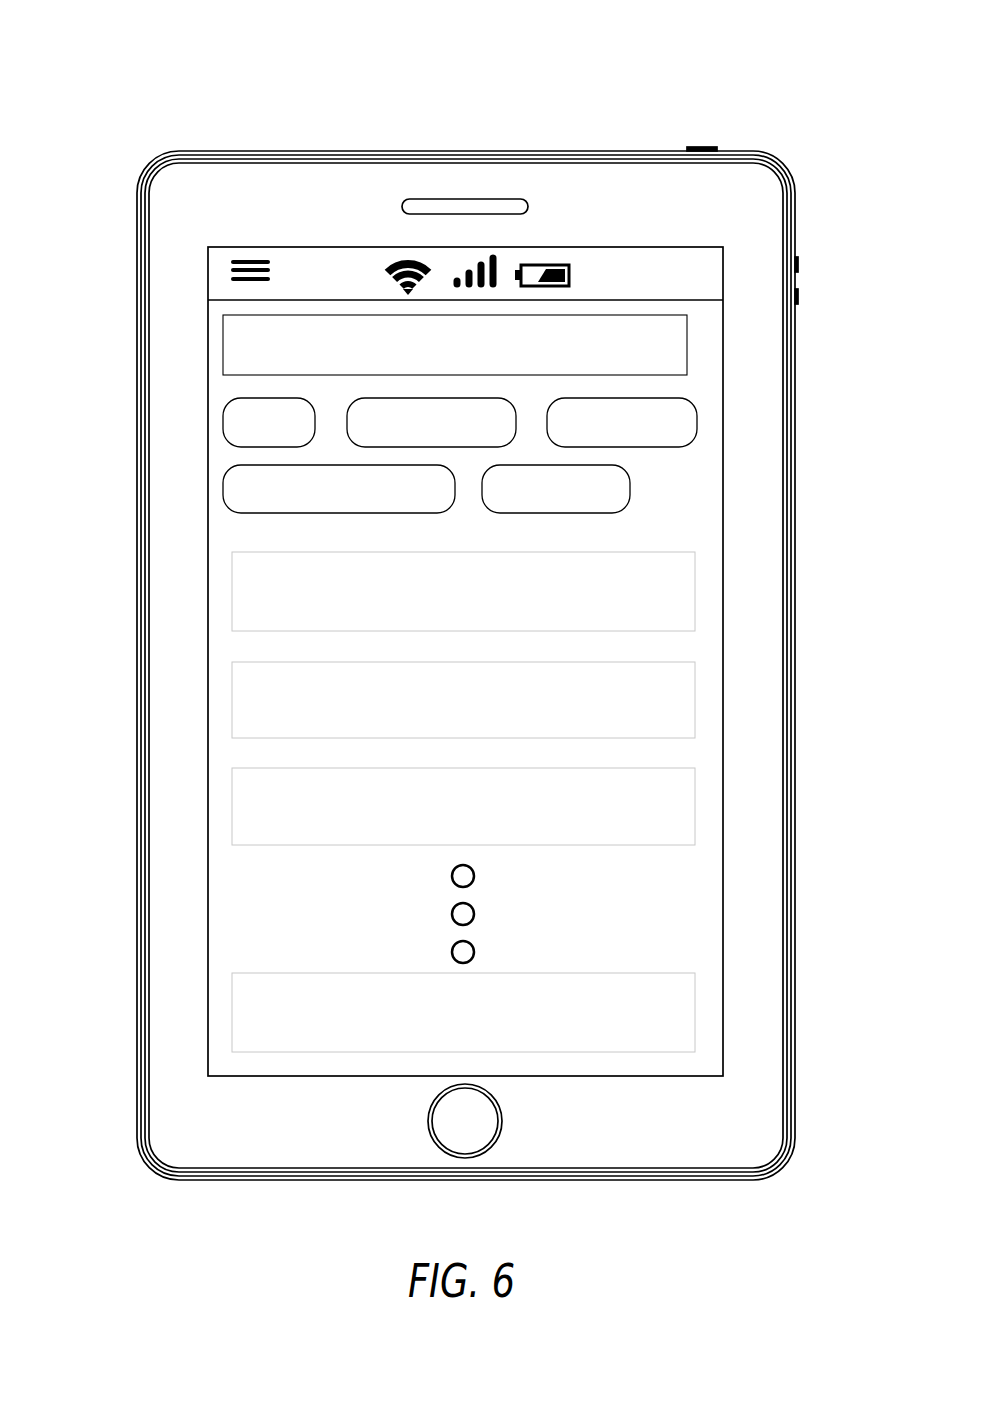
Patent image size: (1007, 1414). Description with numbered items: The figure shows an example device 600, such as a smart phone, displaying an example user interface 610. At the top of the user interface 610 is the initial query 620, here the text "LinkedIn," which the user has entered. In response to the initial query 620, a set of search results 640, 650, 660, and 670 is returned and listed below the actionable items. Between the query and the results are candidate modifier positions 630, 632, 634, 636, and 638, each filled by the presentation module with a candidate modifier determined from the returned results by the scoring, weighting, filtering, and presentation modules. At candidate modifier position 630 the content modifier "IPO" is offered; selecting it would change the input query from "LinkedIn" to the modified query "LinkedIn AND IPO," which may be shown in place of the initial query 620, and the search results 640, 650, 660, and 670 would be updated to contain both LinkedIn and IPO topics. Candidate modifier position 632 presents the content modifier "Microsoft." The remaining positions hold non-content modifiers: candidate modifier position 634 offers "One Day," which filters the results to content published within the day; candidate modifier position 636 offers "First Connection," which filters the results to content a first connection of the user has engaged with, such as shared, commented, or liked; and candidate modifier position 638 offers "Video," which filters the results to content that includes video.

The device 600 is at (450, 594).
The user interface 610 is at (205, 246).
The initial query 620 is at (222, 348).
The candidate modifier position 630 is at (222, 425).
The candidate modifier position 632 is at (455, 394).
The candidate modifier position 634 is at (687, 420).
The candidate modifier position 636 is at (237, 495).
The candidate modifier position 638 is at (612, 497).
The search result 640 is at (232, 598).
The search result 650 is at (232, 697).
The search result 660 is at (232, 808).
The search result 670 is at (232, 1012).